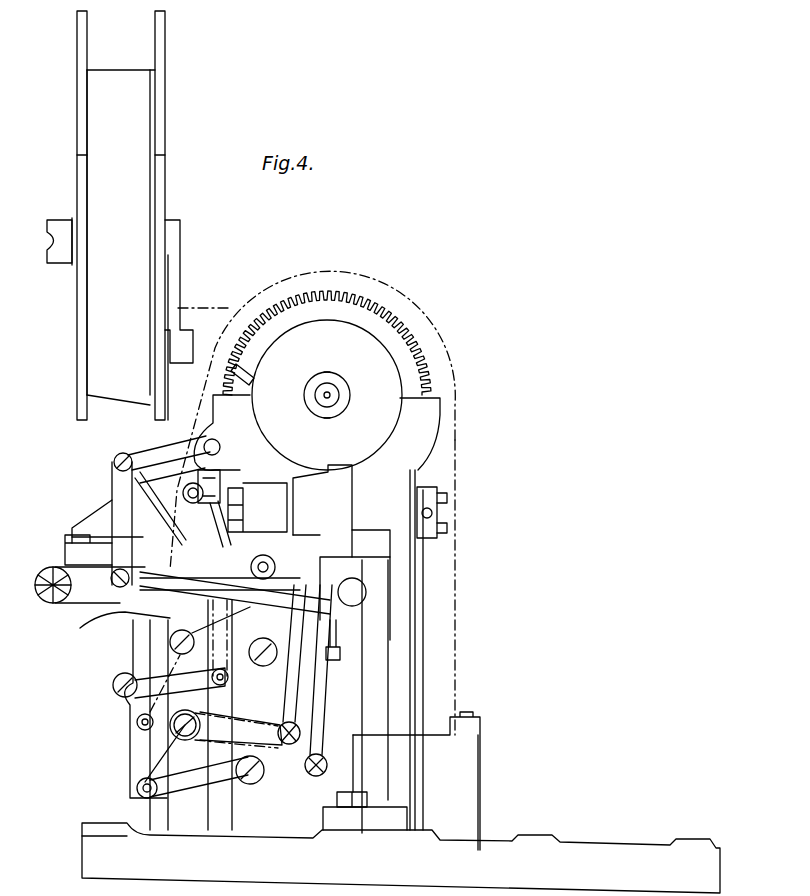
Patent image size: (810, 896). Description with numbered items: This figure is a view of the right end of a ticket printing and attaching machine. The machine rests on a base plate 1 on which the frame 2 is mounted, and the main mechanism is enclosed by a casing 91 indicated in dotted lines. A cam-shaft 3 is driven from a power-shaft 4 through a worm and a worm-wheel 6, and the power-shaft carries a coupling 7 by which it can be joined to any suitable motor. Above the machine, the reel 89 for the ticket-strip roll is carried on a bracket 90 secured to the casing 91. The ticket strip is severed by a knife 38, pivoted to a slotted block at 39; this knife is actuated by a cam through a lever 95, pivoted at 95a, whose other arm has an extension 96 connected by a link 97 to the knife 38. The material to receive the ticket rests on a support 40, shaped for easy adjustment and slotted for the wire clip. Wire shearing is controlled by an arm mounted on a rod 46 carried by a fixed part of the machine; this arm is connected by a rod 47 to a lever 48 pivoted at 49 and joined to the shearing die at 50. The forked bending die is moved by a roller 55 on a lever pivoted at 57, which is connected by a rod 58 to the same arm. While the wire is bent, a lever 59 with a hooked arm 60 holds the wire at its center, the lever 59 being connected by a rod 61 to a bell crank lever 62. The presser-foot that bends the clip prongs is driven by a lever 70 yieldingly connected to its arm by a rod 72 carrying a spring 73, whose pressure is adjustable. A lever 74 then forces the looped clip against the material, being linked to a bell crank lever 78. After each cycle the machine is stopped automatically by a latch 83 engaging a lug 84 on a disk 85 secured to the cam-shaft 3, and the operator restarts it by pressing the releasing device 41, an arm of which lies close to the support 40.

The base plate 1 is at (401, 858).
The frame 2 is at (324, 705).
The cam-shaft 3 is at (330, 395).
The power-shaft 4 is at (428, 487).
The worm-wheel 6 is at (420, 370).
The coupling 7 is at (448, 499).
The knife 38 is at (74, 578).
The pivot of knife 39 is at (130, 600).
The support 40 is at (112, 626).
The releasing device 41 is at (137, 558).
The rod 46 is at (280, 540).
The rod 47 is at (292, 681).
The lever 48 is at (238, 730).
The pivot of lever 49 is at (192, 710).
The connection to die 50 is at (137, 724).
The roller 55 is at (160, 793).
The pivot of lever 57 is at (254, 785).
The rod 58 is at (323, 703).
The lever 59 is at (181, 683).
The hooked arm 60 is at (124, 648).
The rod 61 is at (212, 526).
The bell crank lever 62 is at (222, 488).
The lever 70 is at (346, 640).
The rod 72 is at (247, 616).
The spring 73 is at (362, 591).
The lever 74 is at (200, 659).
The bell crank lever 78 is at (265, 640).
The latch 83 is at (341, 552).
The lug 84 is at (252, 378).
The disk 85 is at (327, 395).
The reel 89 is at (106, 200).
The bracket 90 is at (178, 306).
The casing 91 is at (362, 280).
The lever 95 is at (196, 438).
The pivot of lever 95a is at (219, 443).
The extension 96 is at (114, 464).
The link 97 is at (112, 502).